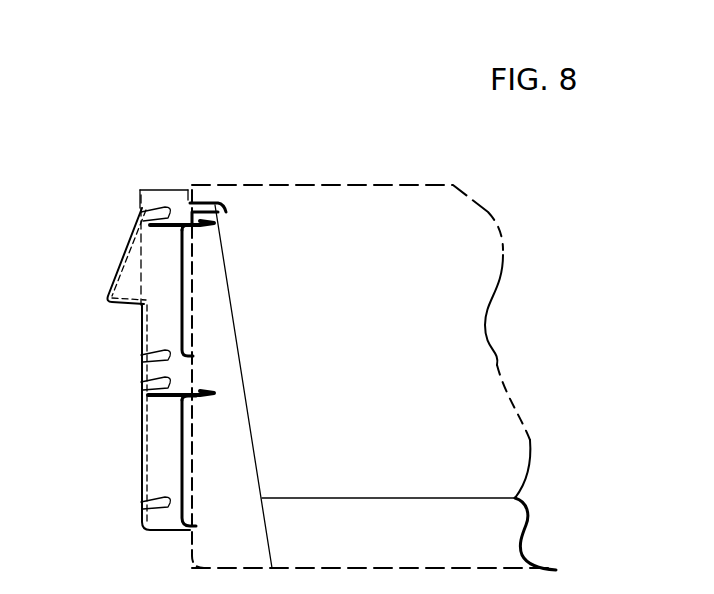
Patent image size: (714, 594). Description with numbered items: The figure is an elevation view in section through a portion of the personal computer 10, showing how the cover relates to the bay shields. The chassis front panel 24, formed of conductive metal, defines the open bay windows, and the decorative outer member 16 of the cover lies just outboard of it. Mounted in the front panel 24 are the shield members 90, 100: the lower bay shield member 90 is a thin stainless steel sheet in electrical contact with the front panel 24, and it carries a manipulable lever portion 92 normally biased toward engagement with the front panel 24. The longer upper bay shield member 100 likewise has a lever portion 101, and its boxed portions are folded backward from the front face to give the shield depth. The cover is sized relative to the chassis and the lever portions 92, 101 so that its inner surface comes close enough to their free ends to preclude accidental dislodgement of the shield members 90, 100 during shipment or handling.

The microcomputer 10 is at (158, 150).
The decorative outer member 16 is at (152, 190).
The front panel 24 is at (235, 326).
The shield member 90 is at (148, 470).
The lever portion 92 is at (156, 416).
The shield member 100 is at (142, 322).
The lever portion 101 is at (134, 254).